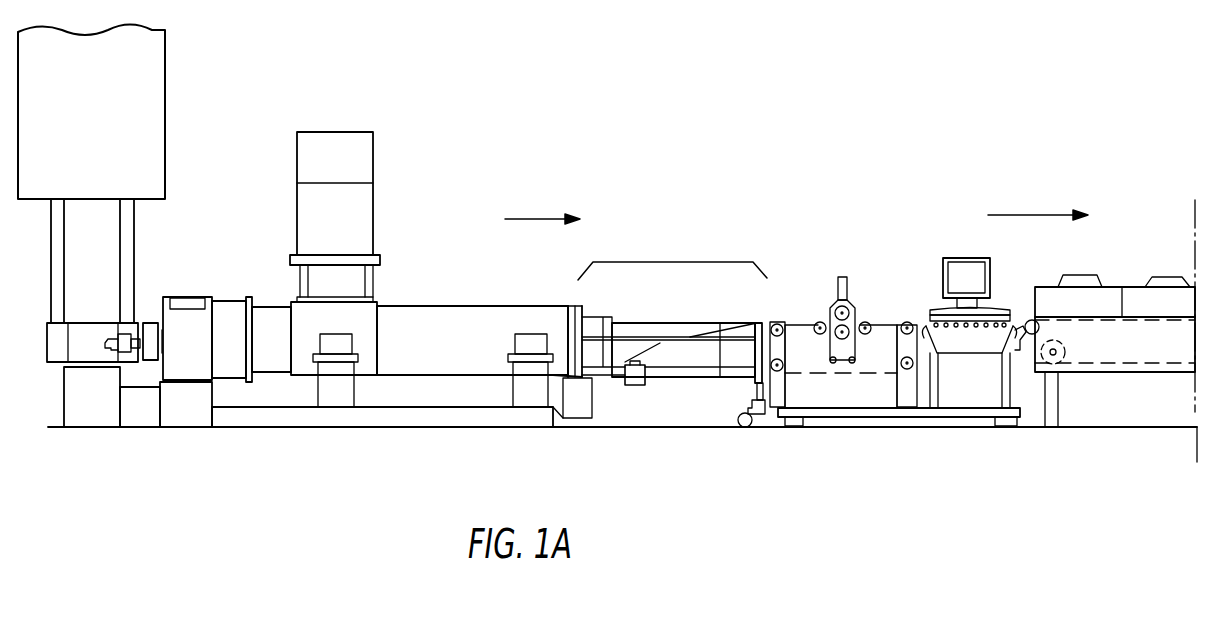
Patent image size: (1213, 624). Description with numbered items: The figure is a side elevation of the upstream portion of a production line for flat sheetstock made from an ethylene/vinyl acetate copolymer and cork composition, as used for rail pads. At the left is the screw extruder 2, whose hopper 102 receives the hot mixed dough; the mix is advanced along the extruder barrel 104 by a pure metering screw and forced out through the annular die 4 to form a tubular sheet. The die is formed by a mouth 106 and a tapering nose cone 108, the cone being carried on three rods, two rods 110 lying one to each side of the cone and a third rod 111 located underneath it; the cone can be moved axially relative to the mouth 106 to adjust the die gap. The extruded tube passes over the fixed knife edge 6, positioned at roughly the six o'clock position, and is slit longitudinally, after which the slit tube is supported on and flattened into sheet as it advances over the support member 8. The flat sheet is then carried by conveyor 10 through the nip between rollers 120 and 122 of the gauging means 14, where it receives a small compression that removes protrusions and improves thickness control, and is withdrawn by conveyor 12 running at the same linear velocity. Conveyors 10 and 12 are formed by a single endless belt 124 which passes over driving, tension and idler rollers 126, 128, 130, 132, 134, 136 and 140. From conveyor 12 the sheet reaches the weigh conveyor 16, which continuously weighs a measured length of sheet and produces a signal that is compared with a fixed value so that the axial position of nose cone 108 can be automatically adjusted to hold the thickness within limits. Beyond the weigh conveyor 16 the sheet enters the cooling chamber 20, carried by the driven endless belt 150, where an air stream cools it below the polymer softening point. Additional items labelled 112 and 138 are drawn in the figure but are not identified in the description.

The screw extruder 2 is at (372, 269).
The annular die 4 is at (590, 323).
The fixed knife edge 6 is at (637, 388).
The support member 8 is at (683, 328).
The conveyor 10 is at (795, 325).
The conveyor 12 is at (886, 320).
The gauging means 14 is at (855, 308).
The weigh conveyor 16 is at (997, 307).
The cooling chamber 20 is at (1100, 303).
The hopper 102 is at (307, 213).
The extruder barrel 104 is at (455, 351).
The die mouth 106 is at (610, 318).
The tapering nose cone 108 is at (680, 347).
The side support rods 110 is at (725, 340).
The lower support rod 111 is at (727, 373).
The caster 112 is at (738, 427).
The roller 120 is at (856, 305).
The roller 122 is at (838, 352).
The endless belt 124 is at (810, 377).
The roller 126 is at (822, 322).
The roller 128 is at (866, 322).
The roller 130 is at (906, 320).
The roller 132 is at (911, 400).
The roller 134 is at (777, 423).
The roller 136 is at (779, 323).
The support 138 is at (828, 373).
The roller 140 is at (864, 373).
The driven endless belt 150 is at (1130, 348).